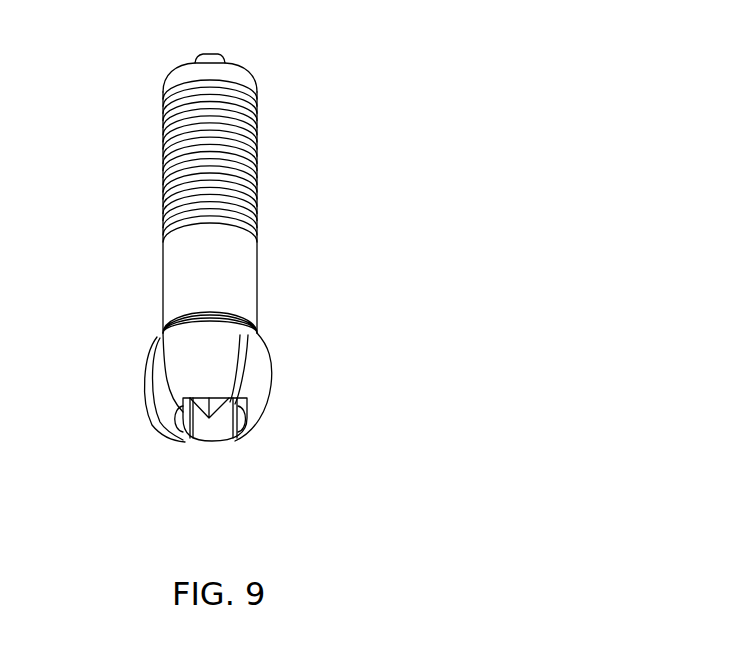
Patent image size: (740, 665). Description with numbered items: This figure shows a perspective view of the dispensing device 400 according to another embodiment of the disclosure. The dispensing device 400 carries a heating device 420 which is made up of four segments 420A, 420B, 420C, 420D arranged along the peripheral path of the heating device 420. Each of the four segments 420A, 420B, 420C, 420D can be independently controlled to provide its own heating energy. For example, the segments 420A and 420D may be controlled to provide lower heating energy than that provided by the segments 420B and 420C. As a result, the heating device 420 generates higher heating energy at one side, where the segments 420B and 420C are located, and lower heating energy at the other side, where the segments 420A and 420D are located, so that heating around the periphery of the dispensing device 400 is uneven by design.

The dispensing device 400 is at (295, 94).
The heating device 420 is at (212, 444).
The segment 420A is at (260, 390).
The segment 420B is at (223, 440).
The segment 420C is at (172, 420).
The segment 420D is at (180, 372).